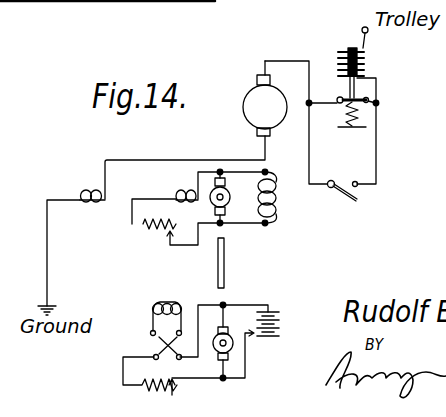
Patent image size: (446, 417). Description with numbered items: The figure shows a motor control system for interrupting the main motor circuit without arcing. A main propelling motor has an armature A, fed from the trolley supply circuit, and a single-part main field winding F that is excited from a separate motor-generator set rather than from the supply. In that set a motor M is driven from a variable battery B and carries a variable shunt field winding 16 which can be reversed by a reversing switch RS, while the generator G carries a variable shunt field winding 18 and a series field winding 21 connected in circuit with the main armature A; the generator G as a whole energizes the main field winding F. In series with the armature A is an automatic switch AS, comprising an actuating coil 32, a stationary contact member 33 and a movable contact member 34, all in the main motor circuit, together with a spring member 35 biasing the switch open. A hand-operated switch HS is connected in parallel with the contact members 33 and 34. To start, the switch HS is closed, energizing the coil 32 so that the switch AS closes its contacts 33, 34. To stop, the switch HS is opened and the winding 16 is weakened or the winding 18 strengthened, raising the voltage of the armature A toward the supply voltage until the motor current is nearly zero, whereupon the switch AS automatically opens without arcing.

The variable shunt field winding 16 is at (168, 303).
The variable shunt field winding 18 is at (179, 194).
The series field winding 21 is at (90, 206).
The actuating coil 32 is at (363, 62).
The stationary contact member 33 is at (366, 104).
The movable contact member 34 is at (338, 97).
The spring member 35 is at (352, 127).
The armature A is at (265, 105).
The generator G is at (236, 181).
The main field winding F is at (277, 200).
The switch S is at (224, 265).
The battery B is at (280, 310).
The motor M is at (233, 322).
The reversing switch RS is at (163, 345).
The hand-operated switch HS is at (358, 202).
The automatic switch AS is at (360, 87).